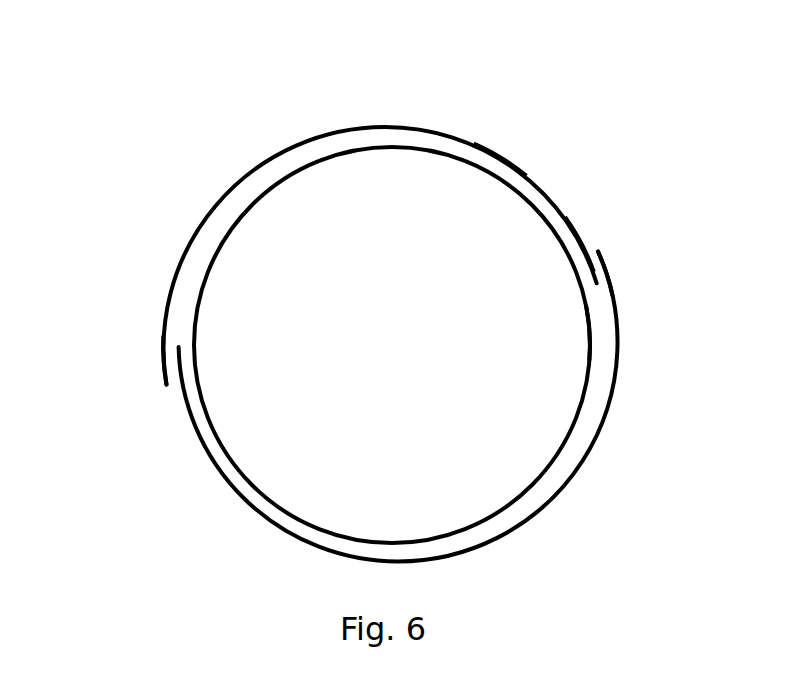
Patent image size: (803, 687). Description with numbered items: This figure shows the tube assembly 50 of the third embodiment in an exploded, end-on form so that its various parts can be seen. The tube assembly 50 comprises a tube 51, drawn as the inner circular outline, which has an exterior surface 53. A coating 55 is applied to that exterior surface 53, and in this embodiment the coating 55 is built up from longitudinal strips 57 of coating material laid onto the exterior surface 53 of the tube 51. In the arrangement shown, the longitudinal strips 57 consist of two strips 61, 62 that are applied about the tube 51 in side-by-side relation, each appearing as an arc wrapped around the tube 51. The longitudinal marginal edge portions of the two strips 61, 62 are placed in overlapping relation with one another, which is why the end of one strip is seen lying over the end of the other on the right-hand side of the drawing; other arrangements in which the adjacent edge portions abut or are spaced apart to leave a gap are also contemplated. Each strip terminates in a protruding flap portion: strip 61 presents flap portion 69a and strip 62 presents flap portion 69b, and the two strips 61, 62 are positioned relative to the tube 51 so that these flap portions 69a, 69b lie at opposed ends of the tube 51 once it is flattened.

The tube assembly 50 is at (185, 192).
The tube 51 is at (590, 378).
The exterior surface 53 is at (590, 333).
The coating 55 is at (503, 155).
The longitudinal strips 57 is at (437, 129).
The strip 61 is at (582, 243).
The strip 62 is at (530, 520).
The flap portion 69a is at (165, 370).
The flap portion 69b is at (603, 268).